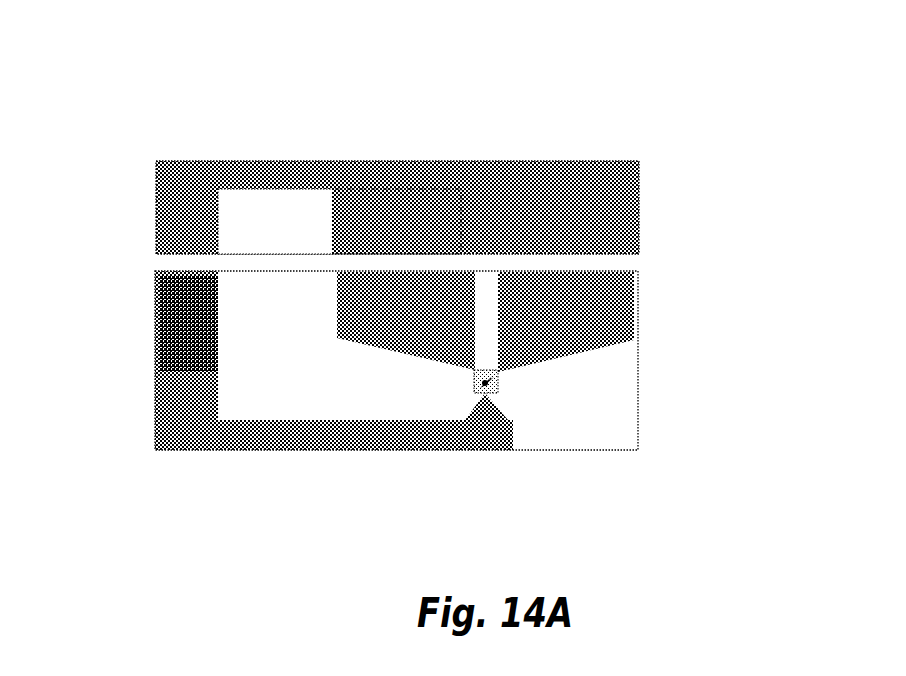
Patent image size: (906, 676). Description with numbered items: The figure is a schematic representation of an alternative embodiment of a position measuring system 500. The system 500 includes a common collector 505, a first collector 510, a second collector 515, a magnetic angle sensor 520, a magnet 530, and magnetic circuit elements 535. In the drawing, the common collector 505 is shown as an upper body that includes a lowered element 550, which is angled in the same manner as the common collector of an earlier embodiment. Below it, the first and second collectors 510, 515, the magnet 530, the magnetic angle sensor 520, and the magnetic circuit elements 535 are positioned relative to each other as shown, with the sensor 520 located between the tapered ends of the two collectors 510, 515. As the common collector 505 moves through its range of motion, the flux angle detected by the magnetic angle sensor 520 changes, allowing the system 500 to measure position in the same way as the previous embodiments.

The position measuring system 500 is at (640, 52).
The common collector 505 is at (337, 157).
The lowered element 550 is at (652, 197).
The first collector 510 is at (362, 347).
The second collector 515 is at (638, 321).
The magnetic angle sensor 520 is at (497, 388).
The magnet 530 is at (152, 320).
The magnetic circuit elements 535 is at (290, 448).